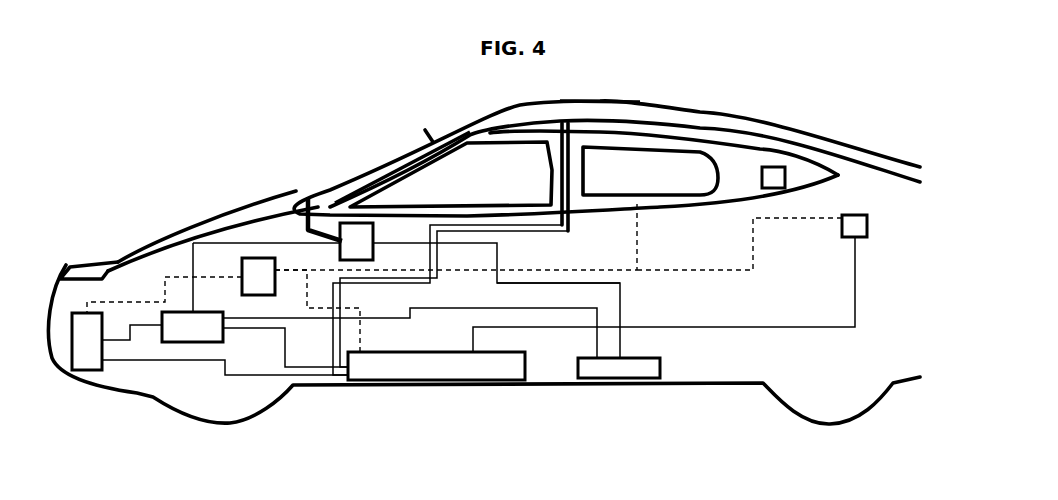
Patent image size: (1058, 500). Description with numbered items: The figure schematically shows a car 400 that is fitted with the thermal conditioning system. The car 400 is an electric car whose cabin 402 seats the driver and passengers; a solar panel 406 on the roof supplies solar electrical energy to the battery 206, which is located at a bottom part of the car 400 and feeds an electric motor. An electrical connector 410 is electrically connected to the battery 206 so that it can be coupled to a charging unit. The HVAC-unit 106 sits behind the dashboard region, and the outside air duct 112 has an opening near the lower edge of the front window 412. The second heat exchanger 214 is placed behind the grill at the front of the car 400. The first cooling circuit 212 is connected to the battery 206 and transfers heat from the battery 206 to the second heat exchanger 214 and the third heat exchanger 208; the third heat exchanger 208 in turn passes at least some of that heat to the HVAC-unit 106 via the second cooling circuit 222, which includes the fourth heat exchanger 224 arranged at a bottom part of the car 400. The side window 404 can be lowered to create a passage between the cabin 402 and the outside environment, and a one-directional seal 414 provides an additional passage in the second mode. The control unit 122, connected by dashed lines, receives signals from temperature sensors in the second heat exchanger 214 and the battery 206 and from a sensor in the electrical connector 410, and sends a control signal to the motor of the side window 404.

The car 400 is at (217, 124).
The cabin 402 is at (470, 177).
The side window 404 is at (668, 170).
The solar panel 406 is at (596, 102).
The front window 412 is at (370, 165).
The one-directional seal 414 is at (785, 177).
The electrical connector 410 is at (855, 222).
The HVAC-unit 106 is at (357, 240).
The outside air duct 112 is at (300, 207).
The control unit 122 is at (258, 278).
The second heat exchanger 214 is at (90, 353).
The third heat exchanger 208 is at (192, 335).
The first cooling circuit 212 is at (262, 375).
The battery 206 is at (393, 367).
The fourth heat exchanger 224 is at (613, 368).
The second cooling circuit 222 is at (620, 294).